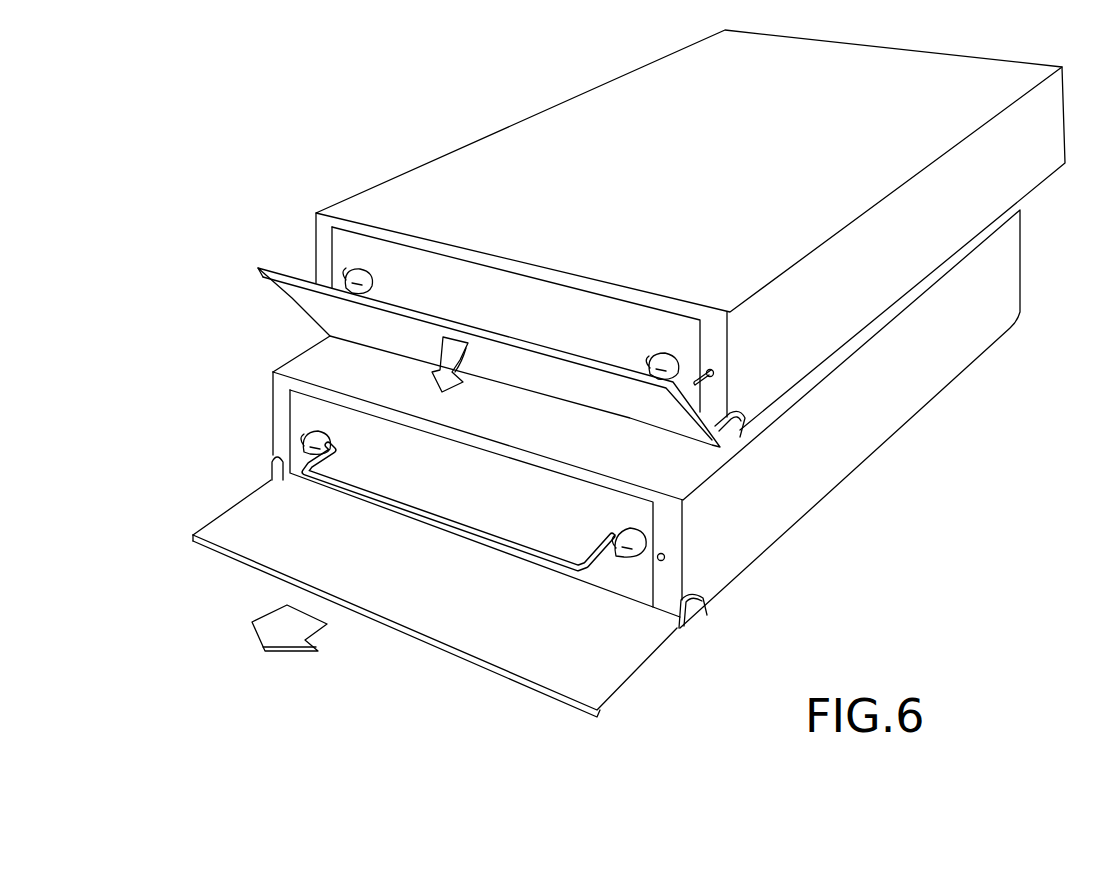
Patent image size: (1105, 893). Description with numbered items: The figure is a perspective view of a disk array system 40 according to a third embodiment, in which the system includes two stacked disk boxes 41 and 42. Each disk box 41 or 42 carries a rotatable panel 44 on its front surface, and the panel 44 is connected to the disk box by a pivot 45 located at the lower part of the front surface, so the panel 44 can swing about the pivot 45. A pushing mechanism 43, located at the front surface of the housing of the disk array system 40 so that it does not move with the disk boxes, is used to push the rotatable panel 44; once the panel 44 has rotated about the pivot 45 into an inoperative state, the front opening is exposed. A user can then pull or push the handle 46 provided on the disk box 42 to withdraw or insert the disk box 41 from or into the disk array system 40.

The disk array system 40 is at (641, 373).
The disk box 41 is at (1040, 157).
The disk box 42 is at (997, 313).
The pushing mechanism 43 is at (701, 386).
The rotatable panel 44 is at (300, 296).
The pivot 45 is at (733, 426).
The handle 46 is at (387, 499).